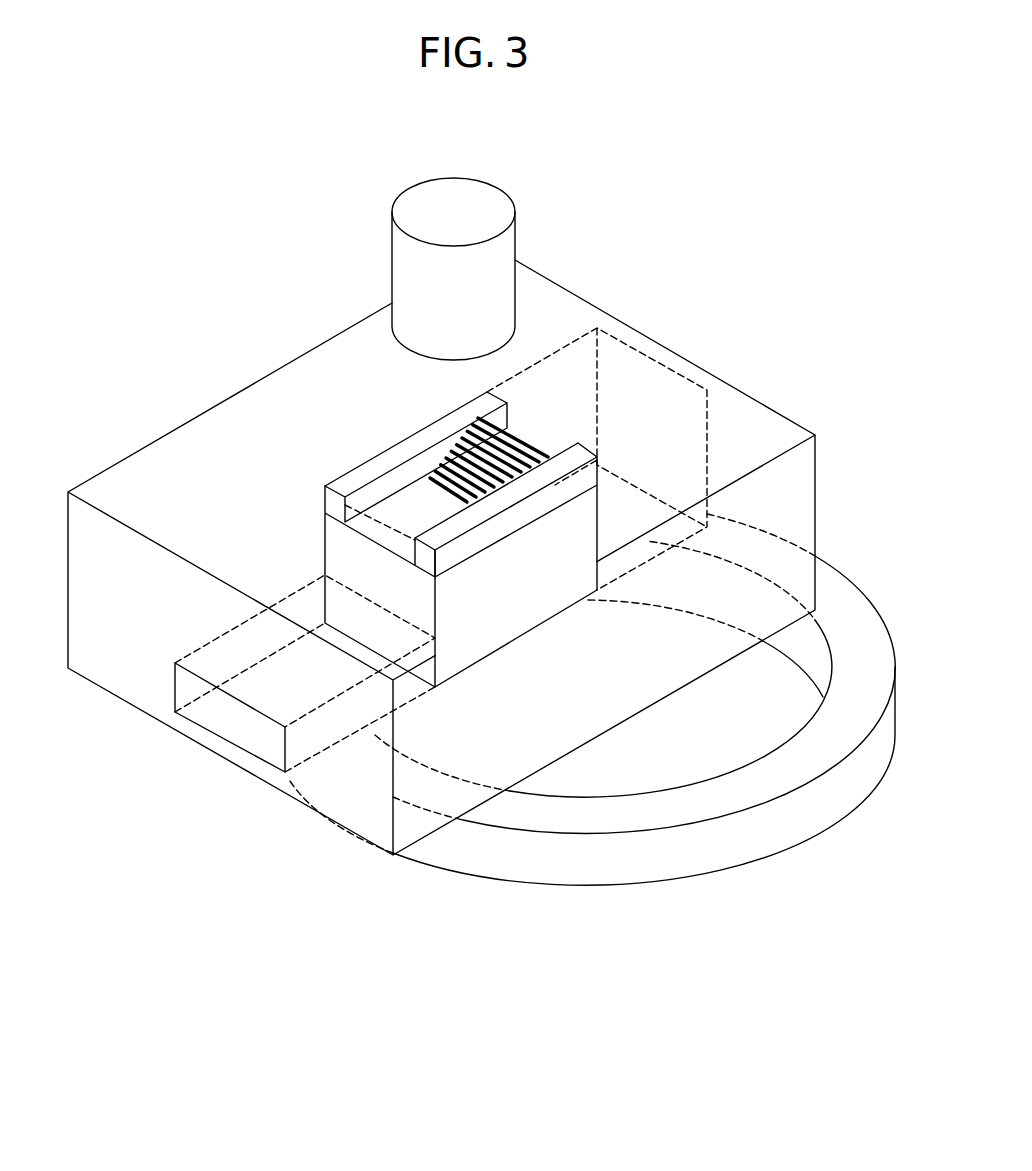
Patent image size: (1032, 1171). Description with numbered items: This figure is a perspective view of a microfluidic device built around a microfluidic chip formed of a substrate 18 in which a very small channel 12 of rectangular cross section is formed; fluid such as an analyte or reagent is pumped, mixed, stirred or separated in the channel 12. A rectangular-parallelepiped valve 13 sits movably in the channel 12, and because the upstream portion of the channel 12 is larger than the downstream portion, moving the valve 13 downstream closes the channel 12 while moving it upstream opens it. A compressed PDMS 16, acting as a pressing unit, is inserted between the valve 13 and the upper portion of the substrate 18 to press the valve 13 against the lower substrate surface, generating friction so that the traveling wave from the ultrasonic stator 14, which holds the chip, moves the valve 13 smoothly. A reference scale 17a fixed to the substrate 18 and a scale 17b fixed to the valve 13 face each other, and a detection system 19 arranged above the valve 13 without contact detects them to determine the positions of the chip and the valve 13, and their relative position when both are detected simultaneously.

The channel 12 is at (639, 393).
The valve 13 is at (345, 556).
The ultrasonic stator 14 is at (742, 848).
The PDMS 16 is at (383, 455).
The reference scale 17a is at (513, 444).
The scale 17b is at (453, 470).
The substrate 18 is at (240, 408).
The detection system 19 is at (413, 266).